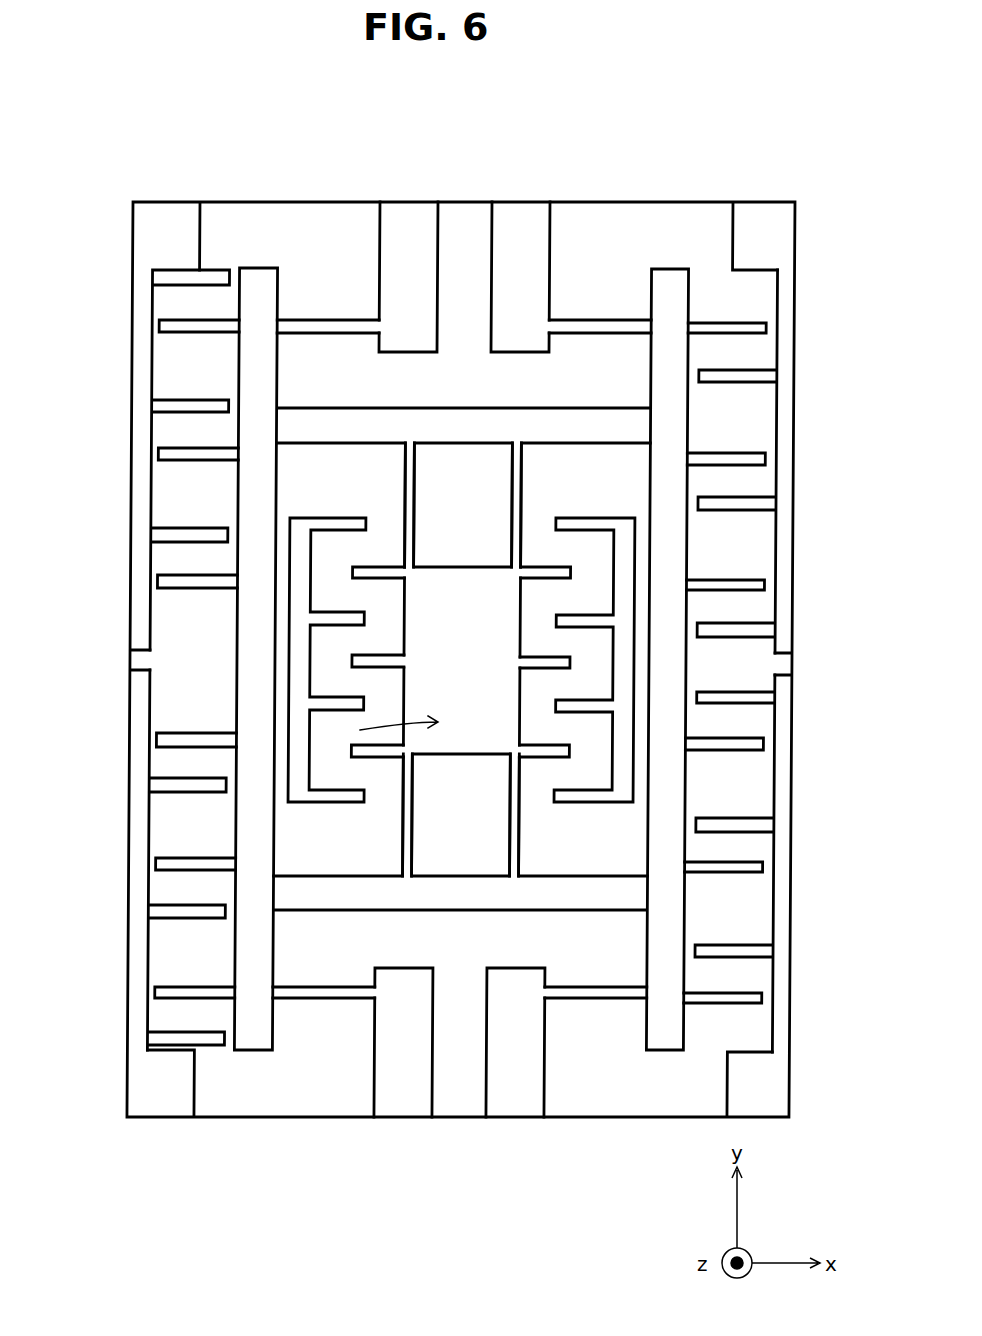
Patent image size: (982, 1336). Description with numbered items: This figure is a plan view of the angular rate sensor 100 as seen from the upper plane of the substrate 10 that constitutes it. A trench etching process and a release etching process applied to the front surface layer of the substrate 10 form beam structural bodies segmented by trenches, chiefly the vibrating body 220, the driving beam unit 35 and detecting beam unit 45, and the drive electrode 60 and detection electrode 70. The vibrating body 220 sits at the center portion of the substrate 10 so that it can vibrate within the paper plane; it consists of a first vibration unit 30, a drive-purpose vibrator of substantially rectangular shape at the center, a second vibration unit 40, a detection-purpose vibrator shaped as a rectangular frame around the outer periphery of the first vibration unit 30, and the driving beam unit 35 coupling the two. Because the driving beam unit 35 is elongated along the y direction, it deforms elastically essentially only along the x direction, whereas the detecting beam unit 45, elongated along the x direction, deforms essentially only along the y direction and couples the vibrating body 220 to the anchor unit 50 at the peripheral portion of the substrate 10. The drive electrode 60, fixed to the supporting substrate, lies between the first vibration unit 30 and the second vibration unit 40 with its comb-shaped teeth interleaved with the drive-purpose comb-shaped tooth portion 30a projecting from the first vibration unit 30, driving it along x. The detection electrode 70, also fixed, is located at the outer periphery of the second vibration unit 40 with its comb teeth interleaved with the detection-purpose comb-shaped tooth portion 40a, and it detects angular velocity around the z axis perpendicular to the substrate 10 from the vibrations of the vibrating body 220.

The angular rate sensor 100 is at (715, 190).
The substrate 10 is at (630, 202).
The first vibration unit 30 is at (437, 683).
The drive-purpose comb-shaped tooth portion 30a is at (373, 655).
The driving beam unit 35 is at (407, 483).
The second vibration unit 40 is at (335, 900).
The detection-purpose comb-shaped tooth portion 40a is at (187, 448).
The detecting beam unit 45 is at (330, 318).
The anchor unit 50 is at (420, 213).
The drive electrode 60 is at (298, 652).
The detection electrode 70 is at (133, 365).
The vibrating body 220 is at (360, 730).